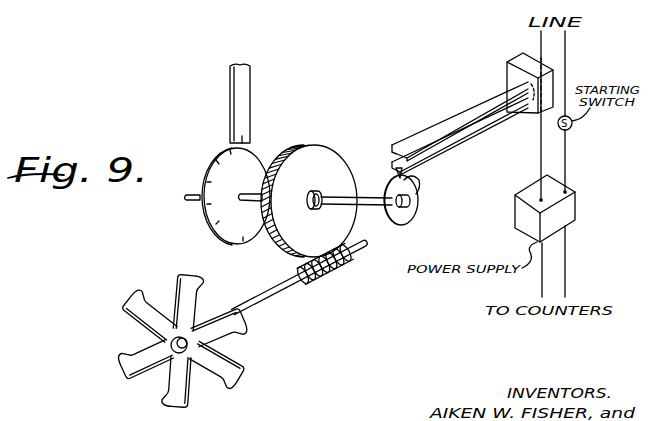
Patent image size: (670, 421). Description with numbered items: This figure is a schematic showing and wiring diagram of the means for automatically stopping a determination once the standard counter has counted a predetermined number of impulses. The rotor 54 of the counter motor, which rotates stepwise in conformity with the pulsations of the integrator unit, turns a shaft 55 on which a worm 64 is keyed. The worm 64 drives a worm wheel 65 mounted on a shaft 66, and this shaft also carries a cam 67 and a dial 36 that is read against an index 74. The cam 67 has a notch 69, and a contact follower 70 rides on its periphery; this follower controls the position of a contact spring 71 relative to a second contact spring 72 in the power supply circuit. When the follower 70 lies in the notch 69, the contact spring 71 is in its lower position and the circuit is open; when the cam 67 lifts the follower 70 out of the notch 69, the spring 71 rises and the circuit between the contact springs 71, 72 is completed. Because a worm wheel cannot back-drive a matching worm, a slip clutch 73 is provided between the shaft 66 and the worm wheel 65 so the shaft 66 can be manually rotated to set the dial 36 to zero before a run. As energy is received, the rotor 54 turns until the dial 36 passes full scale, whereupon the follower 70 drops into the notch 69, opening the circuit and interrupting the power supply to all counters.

The dial 36 is at (213, 152).
The rotor 54 is at (188, 400).
The shaft 55 is at (262, 297).
The worm 64 is at (342, 265).
The worm wheel 65 is at (318, 153).
The shaft 66 is at (397, 222).
The cam 67 is at (421, 185).
The notch 69 is at (413, 200).
The contact follower 70 is at (396, 172).
The contact spring 71 is at (486, 130).
The second contact spring 72 is at (447, 120).
The slip clutch 73 is at (318, 191).
The index 74 is at (252, 97).